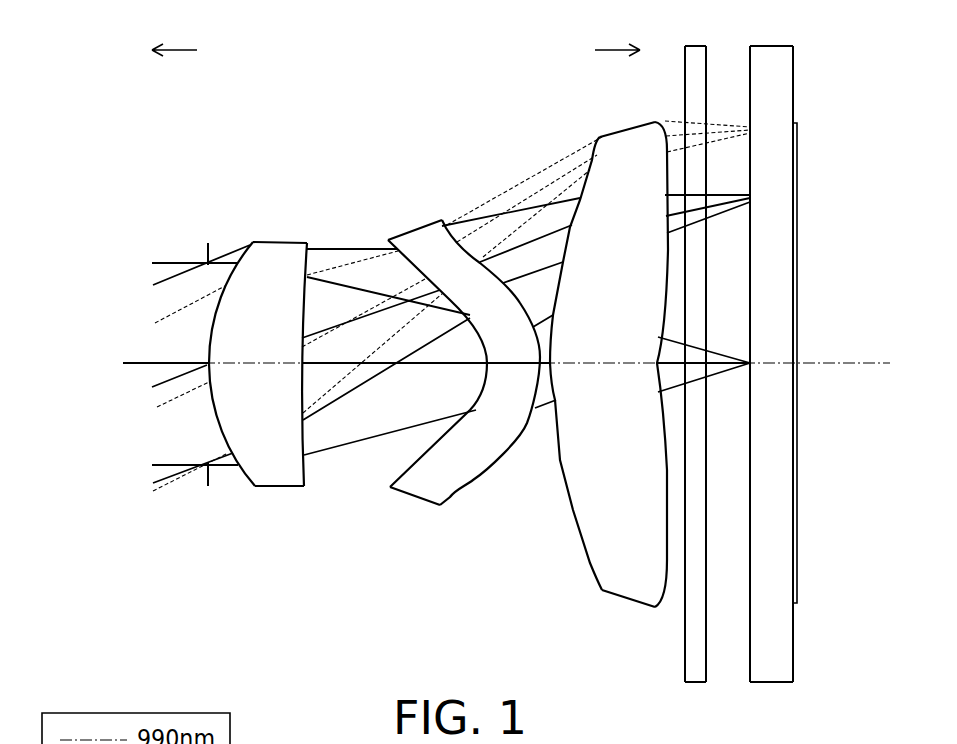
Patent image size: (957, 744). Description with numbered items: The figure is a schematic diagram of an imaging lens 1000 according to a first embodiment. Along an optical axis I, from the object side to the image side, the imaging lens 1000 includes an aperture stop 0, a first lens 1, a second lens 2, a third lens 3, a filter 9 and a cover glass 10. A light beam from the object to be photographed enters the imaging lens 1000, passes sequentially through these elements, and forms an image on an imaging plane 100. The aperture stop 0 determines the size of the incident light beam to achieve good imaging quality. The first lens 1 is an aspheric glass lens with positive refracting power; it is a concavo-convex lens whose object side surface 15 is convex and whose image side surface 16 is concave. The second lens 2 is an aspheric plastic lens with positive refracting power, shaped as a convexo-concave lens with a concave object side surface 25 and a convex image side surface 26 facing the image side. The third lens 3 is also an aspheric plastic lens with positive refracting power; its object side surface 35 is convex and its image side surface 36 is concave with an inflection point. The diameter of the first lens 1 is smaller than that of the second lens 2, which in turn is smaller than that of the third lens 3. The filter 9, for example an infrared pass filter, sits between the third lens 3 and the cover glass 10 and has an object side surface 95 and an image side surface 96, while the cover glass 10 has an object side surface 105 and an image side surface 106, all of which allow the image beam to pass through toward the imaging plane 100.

The imaging lens 1000 is at (139, 113).
The optical axis I is at (150, 362).
The aperture stop 0 is at (206, 258).
The first lens 1 is at (275, 242).
The object side surface of the first lens 15 is at (222, 436).
The image side surface of the first lens 16 is at (307, 478).
The second lens 2 is at (412, 238).
The object side surface of the second lens 25 is at (405, 470).
The image side surface of the second lens 26 is at (452, 490).
The third lens 3 is at (630, 122).
The object side surface of the third lens 35 is at (593, 564).
The image side surface of the third lens 36 is at (658, 607).
The filter 9 is at (692, 46).
The object side surface of the filter 95 is at (683, 665).
The image side surface of the filter 96 is at (707, 670).
The cover glass 10 is at (762, 46).
The object side surface of the cover glass 105 is at (750, 670).
The image side surface of the cover glass 106 is at (795, 675).
The imaging plane 100 is at (798, 598).